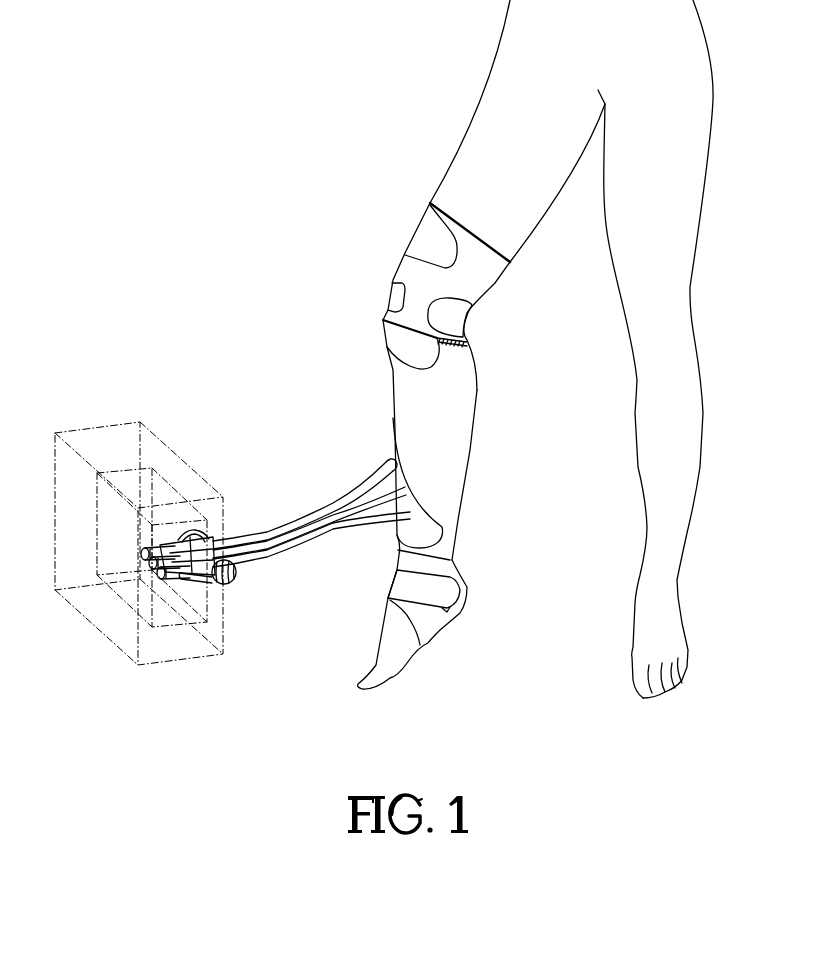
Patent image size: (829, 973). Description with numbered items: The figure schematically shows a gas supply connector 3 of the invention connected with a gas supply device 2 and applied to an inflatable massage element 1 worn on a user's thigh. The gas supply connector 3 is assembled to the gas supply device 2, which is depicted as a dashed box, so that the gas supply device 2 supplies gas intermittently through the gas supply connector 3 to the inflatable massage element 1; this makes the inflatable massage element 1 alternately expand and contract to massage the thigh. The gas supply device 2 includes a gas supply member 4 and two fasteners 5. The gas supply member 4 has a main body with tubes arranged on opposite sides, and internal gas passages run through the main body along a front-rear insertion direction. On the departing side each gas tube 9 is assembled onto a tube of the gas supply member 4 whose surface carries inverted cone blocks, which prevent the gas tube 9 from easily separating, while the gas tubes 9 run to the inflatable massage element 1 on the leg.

The inflatable massage element 1 is at (395, 405).
The gas supply device 2 is at (112, 427).
The gas supply connector 3 is at (212, 497).
The gas supply member 4 is at (183, 577).
The fasteners 5 is at (207, 580).
The gas tube 9 is at (297, 555).